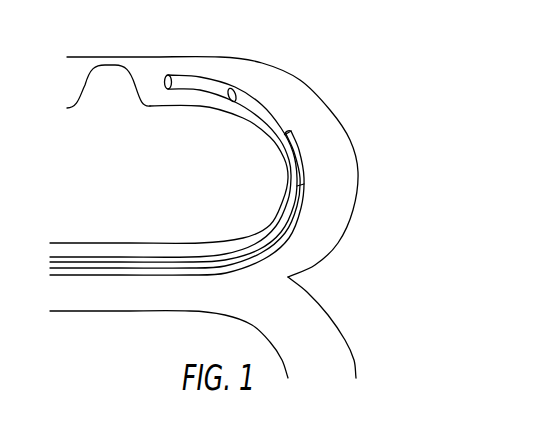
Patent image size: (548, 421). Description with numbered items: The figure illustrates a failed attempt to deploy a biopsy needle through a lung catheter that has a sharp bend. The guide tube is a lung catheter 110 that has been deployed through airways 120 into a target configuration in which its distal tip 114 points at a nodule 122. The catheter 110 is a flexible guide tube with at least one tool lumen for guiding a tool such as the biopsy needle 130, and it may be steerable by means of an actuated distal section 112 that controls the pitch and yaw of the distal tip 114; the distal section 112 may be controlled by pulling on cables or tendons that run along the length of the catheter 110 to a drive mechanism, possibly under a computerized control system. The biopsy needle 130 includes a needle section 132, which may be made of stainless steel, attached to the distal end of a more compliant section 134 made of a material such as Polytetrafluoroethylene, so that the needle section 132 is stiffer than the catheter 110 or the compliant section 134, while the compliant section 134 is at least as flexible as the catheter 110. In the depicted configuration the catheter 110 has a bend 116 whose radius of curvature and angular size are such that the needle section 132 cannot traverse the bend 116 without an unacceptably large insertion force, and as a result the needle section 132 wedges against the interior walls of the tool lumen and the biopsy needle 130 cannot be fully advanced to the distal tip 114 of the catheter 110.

The lung catheter 110 is at (160, 278).
The distal section 112 is at (203, 80).
The distal tip 114 is at (166, 80).
The bend 116 is at (260, 146).
The airways 120 is at (360, 172).
The nodule 122 is at (123, 100).
The biopsy needle 130 is at (254, 248).
The needle section 132 is at (302, 180).
The compliant section 134 is at (128, 270).